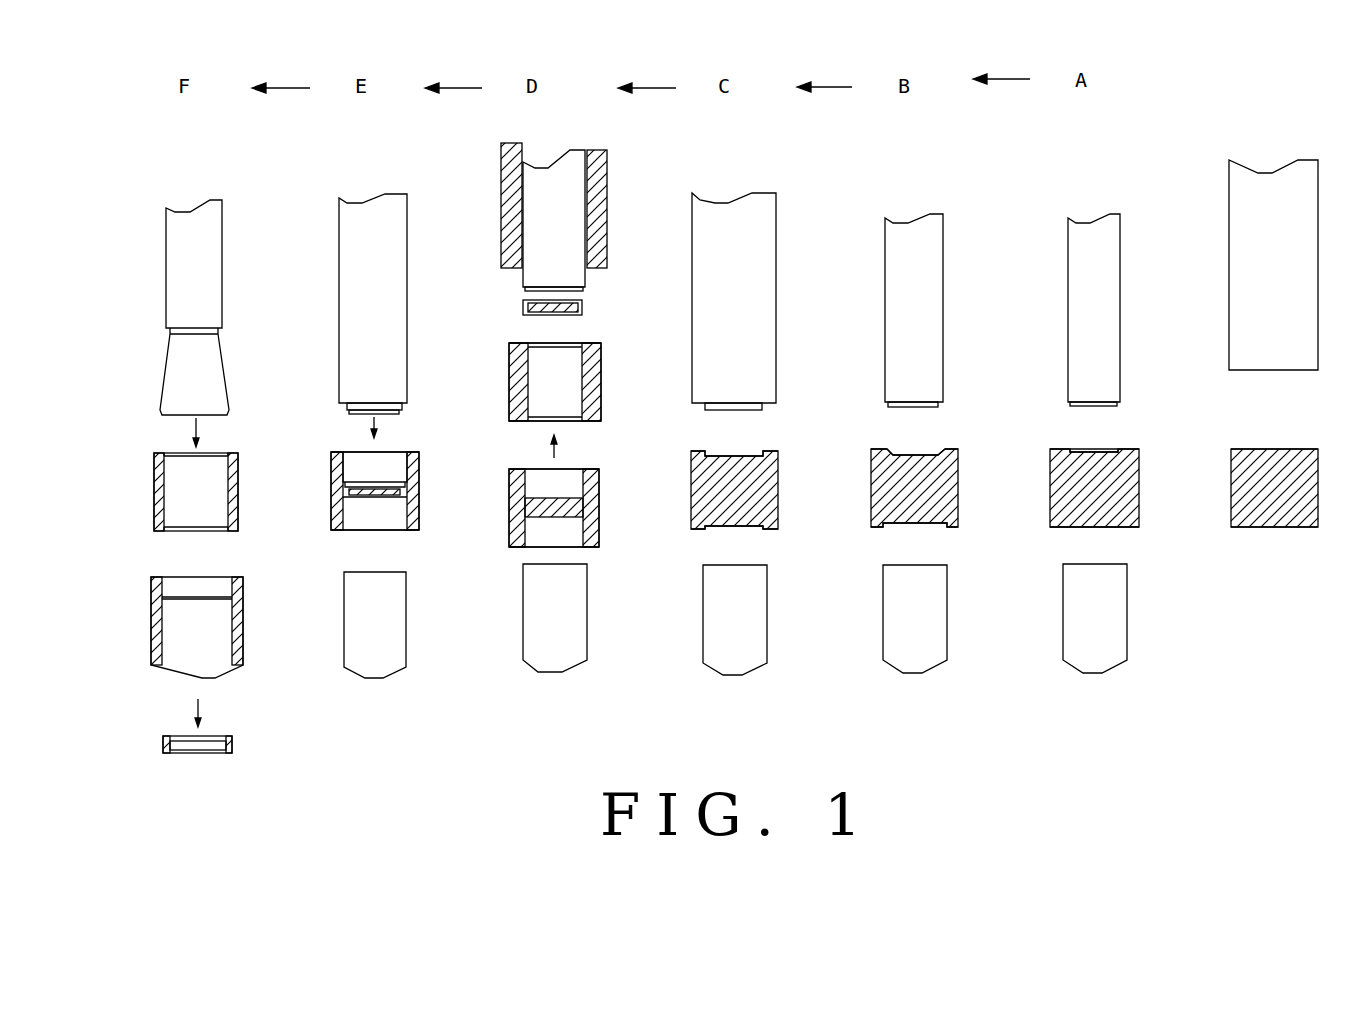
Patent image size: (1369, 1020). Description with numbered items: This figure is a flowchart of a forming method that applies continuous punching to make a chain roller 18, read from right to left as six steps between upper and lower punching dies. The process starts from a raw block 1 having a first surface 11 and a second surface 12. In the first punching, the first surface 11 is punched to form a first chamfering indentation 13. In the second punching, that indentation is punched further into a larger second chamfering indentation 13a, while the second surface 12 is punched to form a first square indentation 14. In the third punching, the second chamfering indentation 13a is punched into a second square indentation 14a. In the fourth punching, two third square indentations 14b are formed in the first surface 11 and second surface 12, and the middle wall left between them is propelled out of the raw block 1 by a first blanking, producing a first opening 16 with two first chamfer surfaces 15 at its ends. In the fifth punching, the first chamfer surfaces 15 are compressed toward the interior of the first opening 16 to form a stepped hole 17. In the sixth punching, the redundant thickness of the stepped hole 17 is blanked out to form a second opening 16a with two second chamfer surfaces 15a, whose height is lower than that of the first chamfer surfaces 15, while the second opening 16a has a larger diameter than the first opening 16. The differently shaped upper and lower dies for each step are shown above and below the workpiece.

The raw block 1 is at (417, 520).
The first surface 11 is at (417, 449).
The second surface 12 is at (410, 530).
The first chamfering indentation 13 is at (1078, 450).
The second chamfering indentation 13a is at (900, 450).
The first square indentation 14 is at (752, 530).
The second square indentation 14a is at (750, 455).
The third square indentation 14b is at (559, 482).
The first chamfer surface 15 is at (567, 343).
The second chamfer surface 15a is at (230, 453).
The first opening 16 is at (400, 470).
The second opening 16a is at (218, 493).
The stepped hole 17 is at (403, 497).
The chain roller 18 is at (237, 505).